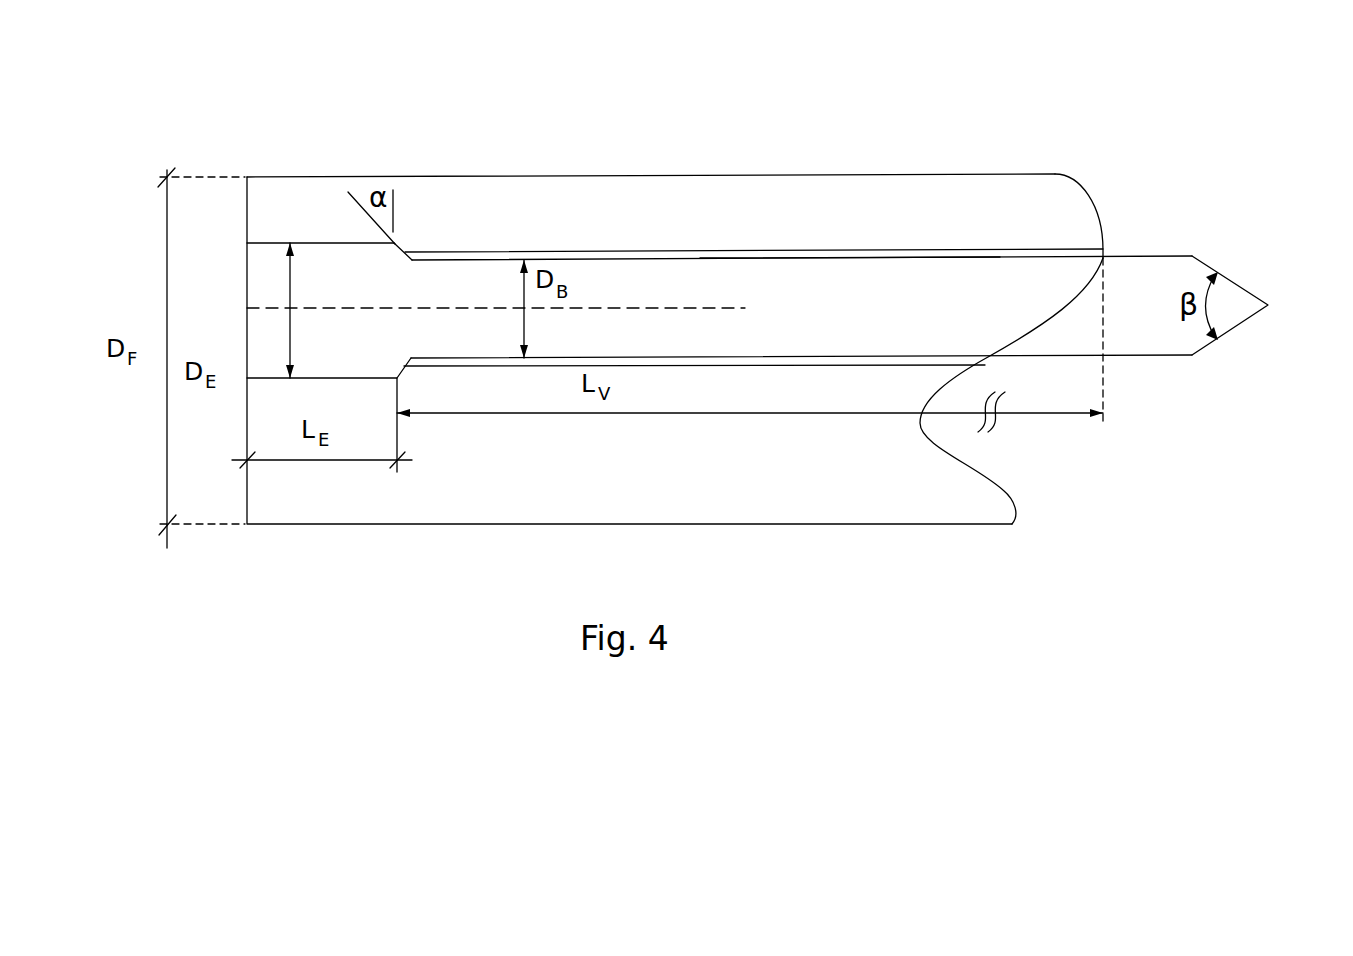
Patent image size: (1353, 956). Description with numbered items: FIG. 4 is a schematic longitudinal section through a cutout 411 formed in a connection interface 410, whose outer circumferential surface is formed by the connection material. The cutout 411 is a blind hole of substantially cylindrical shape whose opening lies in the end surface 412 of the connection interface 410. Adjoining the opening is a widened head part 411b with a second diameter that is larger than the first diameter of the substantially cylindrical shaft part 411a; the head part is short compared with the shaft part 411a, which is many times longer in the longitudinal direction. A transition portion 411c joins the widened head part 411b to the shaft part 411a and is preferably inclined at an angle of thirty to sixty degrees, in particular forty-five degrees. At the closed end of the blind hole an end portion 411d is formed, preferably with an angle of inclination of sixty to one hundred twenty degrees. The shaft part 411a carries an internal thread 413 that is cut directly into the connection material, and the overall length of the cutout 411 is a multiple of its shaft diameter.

The connection interface 410 is at (242, 482).
The cutout 411 is at (565, 241).
The shaft part 411a is at (792, 241).
The widened head part 411b is at (305, 241).
The transition portion 411c is at (410, 243).
The end portion 411d is at (1232, 352).
The end surface 412 is at (243, 210).
The internal thread 413 is at (667, 253).